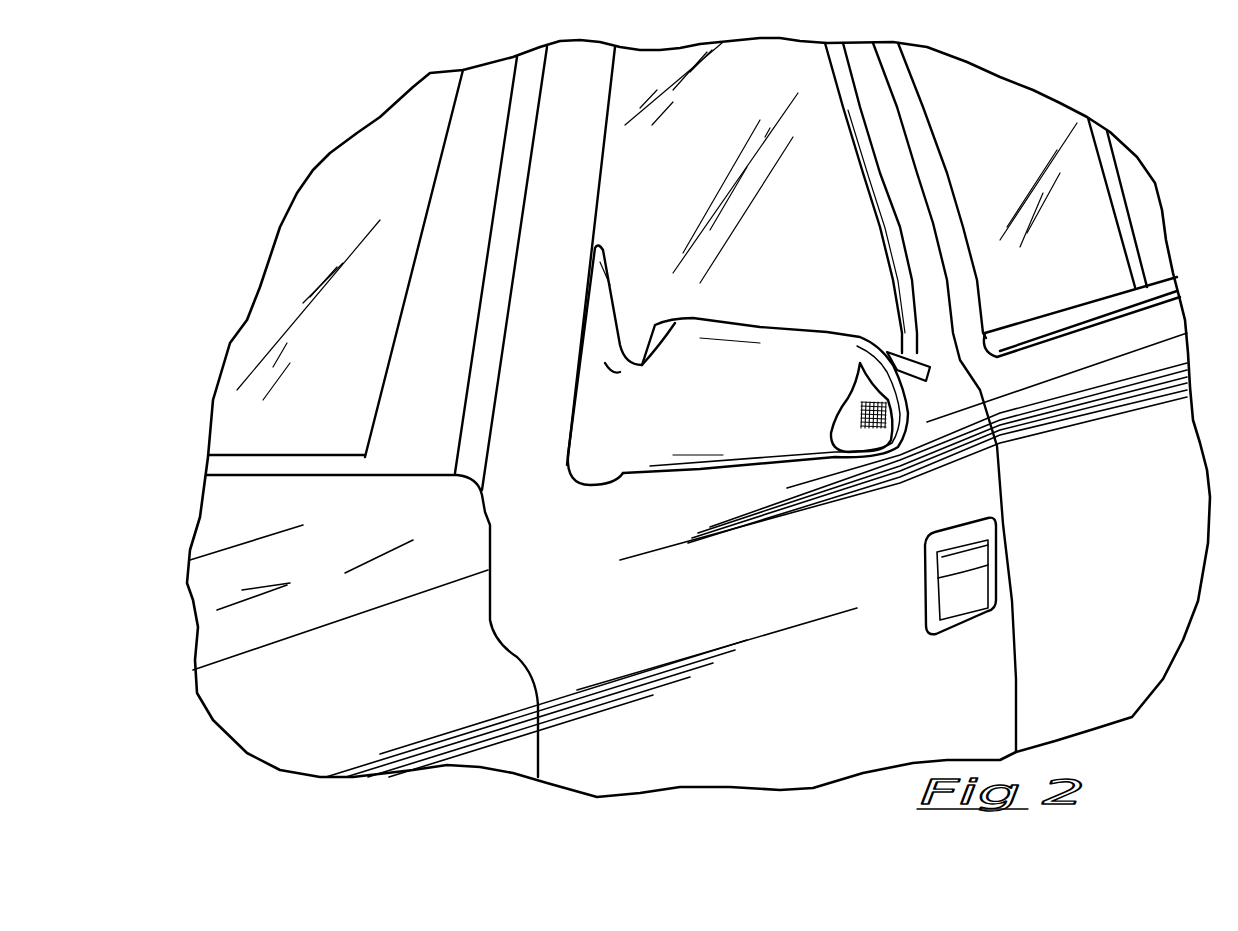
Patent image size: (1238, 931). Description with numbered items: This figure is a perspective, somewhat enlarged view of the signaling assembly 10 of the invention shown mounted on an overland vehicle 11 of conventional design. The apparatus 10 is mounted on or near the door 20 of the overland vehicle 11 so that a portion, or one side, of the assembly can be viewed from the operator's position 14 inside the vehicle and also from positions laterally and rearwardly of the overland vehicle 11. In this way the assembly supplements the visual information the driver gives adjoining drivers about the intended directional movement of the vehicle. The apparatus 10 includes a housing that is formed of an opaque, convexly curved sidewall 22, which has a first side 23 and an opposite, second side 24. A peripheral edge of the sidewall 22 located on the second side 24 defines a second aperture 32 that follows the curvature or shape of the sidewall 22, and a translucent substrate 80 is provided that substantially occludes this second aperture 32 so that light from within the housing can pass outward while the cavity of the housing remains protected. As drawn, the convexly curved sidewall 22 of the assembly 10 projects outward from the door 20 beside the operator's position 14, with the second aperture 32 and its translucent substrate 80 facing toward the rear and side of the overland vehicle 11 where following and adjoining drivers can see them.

The signaling assembly 10 is at (709, 392).
The overland vehicle 11 is at (905, 703).
The operator's position 14 is at (352, 322).
The door 20 is at (790, 608).
The convexly curved sidewall 22 is at (752, 407).
The first side 23 is at (901, 360).
The second side 24 is at (609, 426).
The second aperture 32 is at (860, 368).
The translucent substrate 80 is at (870, 428).